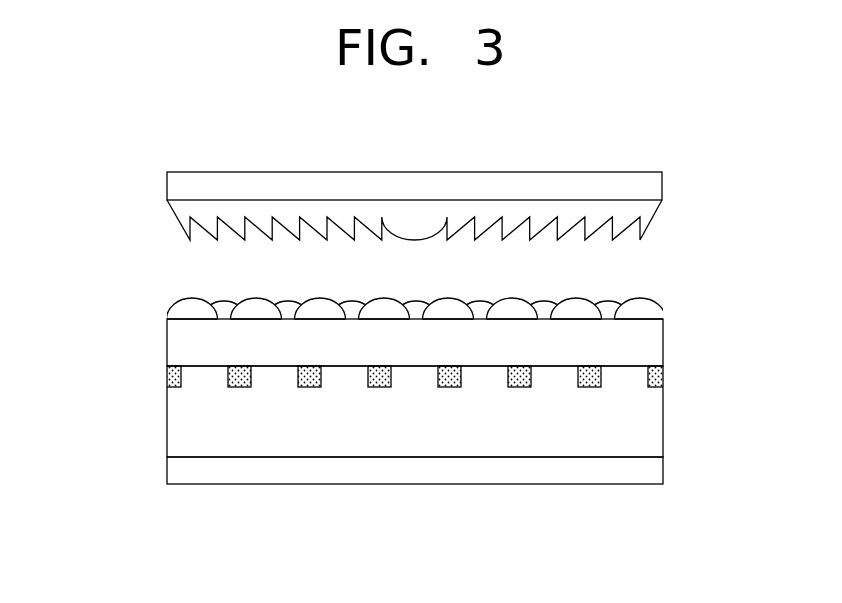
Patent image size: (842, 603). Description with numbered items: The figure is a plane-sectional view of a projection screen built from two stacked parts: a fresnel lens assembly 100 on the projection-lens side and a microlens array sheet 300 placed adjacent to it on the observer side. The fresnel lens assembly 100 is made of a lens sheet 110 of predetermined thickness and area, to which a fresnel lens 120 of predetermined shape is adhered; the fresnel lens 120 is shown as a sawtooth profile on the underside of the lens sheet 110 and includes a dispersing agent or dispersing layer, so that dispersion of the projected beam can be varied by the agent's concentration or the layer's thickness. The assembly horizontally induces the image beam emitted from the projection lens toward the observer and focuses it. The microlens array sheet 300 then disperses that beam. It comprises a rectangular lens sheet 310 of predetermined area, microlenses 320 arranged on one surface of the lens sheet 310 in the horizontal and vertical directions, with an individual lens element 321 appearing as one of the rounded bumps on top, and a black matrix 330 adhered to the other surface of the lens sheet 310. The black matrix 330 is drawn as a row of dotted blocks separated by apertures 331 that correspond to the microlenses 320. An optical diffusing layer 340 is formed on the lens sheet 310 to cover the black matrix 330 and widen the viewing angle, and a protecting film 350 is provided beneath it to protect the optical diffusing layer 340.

The fresnel lens assembly 100 is at (386, 206).
The lens sheet 110 is at (650, 186).
The fresnel lens 120 is at (648, 212).
The microlens array sheet 300 is at (383, 394).
The lens sheet 310 is at (648, 350).
The microlenses 320 is at (454, 289).
The lens 321 is at (648, 305).
The black matrix 330 is at (658, 378).
The opening 331 is at (556, 378).
The optical diffusing layer 340 is at (647, 420).
The protecting film 350 is at (647, 472).